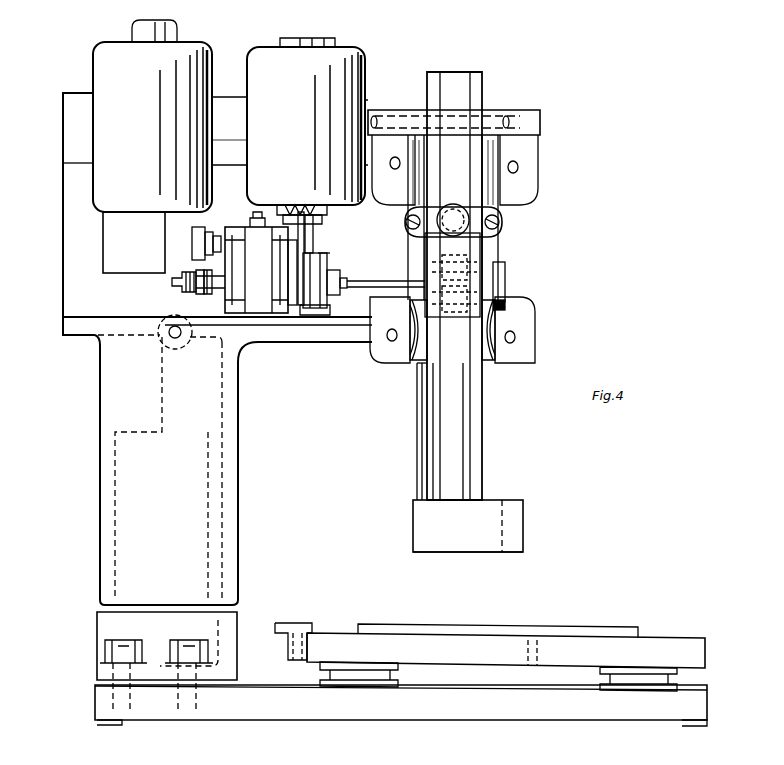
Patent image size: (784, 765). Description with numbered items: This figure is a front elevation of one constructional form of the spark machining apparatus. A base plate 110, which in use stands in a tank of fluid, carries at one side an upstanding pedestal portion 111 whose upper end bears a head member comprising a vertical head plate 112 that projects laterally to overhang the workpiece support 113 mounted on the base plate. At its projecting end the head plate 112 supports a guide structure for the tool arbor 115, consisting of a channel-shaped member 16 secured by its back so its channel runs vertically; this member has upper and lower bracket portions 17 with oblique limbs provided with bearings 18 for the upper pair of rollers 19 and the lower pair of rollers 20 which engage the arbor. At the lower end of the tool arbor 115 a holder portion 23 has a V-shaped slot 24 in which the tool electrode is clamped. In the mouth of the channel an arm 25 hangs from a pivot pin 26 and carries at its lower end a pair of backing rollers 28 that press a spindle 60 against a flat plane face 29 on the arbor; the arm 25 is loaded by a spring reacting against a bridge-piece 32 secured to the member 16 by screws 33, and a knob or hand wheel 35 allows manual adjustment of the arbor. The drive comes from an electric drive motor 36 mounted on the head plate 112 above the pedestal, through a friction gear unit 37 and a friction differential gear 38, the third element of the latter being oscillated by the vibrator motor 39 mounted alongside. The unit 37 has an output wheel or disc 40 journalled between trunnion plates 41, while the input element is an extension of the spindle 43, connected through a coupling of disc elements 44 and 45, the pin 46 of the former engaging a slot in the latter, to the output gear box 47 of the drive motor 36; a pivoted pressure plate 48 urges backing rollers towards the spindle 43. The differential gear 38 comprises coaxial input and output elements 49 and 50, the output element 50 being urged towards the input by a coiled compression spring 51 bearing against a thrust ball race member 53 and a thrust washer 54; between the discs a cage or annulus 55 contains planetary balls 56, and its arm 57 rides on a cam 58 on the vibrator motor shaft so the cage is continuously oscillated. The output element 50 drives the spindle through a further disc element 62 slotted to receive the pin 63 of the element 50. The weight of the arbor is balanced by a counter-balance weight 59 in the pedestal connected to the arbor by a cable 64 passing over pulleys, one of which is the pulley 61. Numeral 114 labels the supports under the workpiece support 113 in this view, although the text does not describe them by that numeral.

The channel-shaped member 16 is at (482, 250).
The bracket portions 17 is at (393, 135).
The bearings 18 is at (397, 158).
The upper pair of rollers 19 is at (482, 148).
The lower pair of rollers 20 is at (482, 348).
The holder portion 23 is at (482, 545).
The V-shaped slot 24 is at (525, 520).
The arm 25 is at (506, 270).
The pivot pin 26 is at (470, 113).
The backing rollers 28 is at (485, 240).
The flat plane face 29 is at (450, 482).
The bridge-piece 32 is at (490, 215).
The screws 33 is at (499, 222).
The knob or hand wheel 35 is at (506, 302).
The drive motor 36 is at (107, 45).
The friction gear unit 37 is at (232, 200).
The friction differential gear 38 is at (313, 240).
The vibrator motor 39 is at (255, 48).
The wheel or disc 40 is at (262, 314).
The trunnion plates 41 is at (236, 314).
The spindle 43 is at (220, 236).
The disc element 44 is at (198, 232).
The disc element 45 is at (212, 230).
The pin 46 is at (182, 262).
The output gear box 47 is at (115, 242).
The pressure plate 48 is at (283, 220).
The input element 49 is at (293, 306).
The output element 50 is at (326, 307).
The coiled compression spring 51 is at (210, 290).
The thrust ball race member 53 is at (218, 317).
The thrust washer 54 is at (200, 285).
The cage or annulus 55 is at (318, 309).
The balls 56 is at (330, 256).
The arm 57 is at (305, 244).
The cam 58 is at (327, 212).
The counter-balance weight 59 is at (208, 508).
The spindle 60 is at (380, 281).
The pulley 61 is at (162, 320).
The disc element 62 is at (333, 272).
The pin 63 is at (345, 278).
The cable 64 is at (162, 386).
The base plate 110 is at (694, 700).
The pedestal portion 111 is at (100, 388).
The head plate 112 is at (63, 283).
The workpiece support 113 is at (668, 640).
The support 114 is at (315, 636).
The tool arbor 115 is at (478, 425).